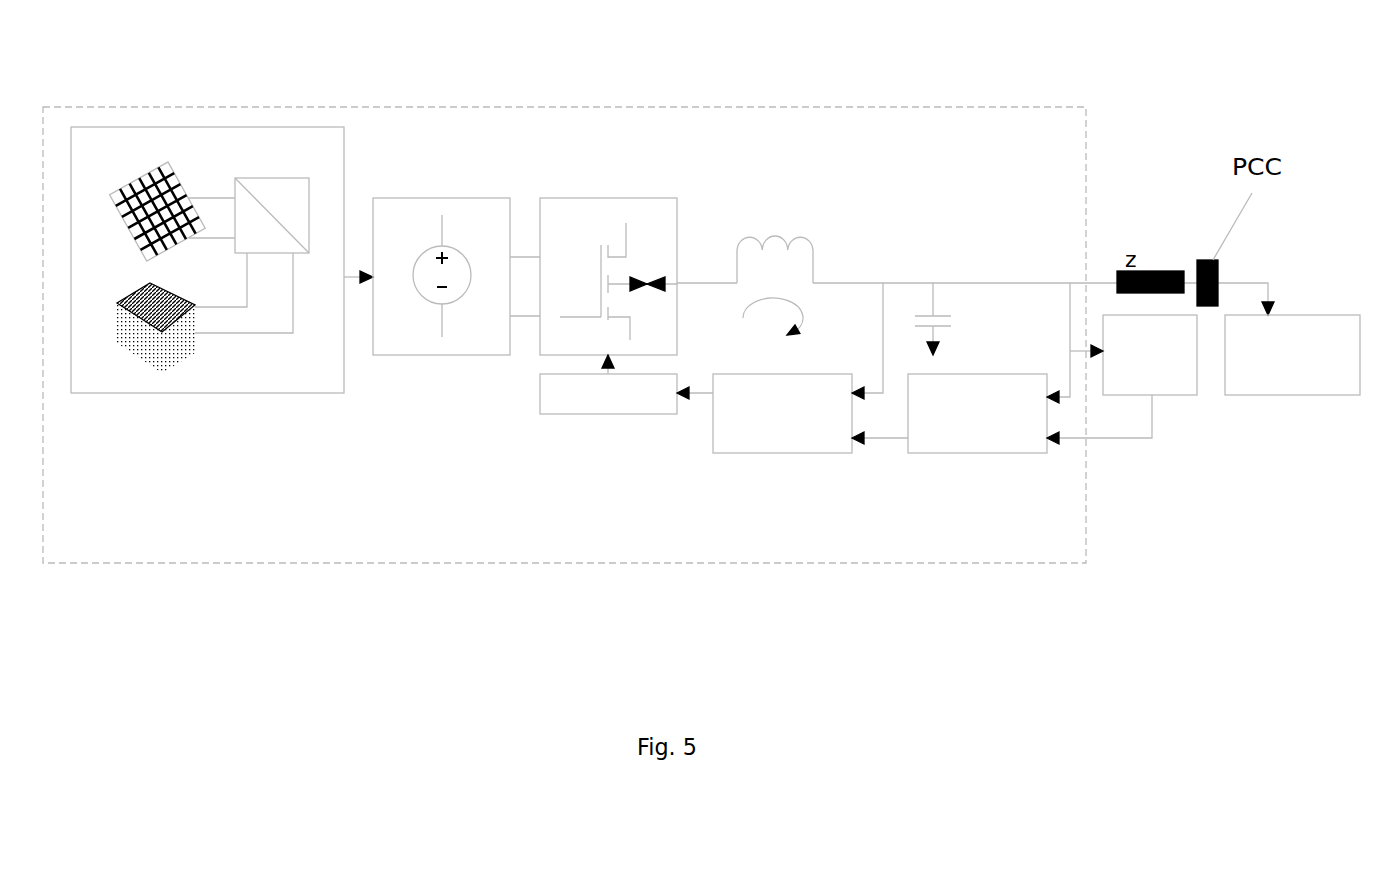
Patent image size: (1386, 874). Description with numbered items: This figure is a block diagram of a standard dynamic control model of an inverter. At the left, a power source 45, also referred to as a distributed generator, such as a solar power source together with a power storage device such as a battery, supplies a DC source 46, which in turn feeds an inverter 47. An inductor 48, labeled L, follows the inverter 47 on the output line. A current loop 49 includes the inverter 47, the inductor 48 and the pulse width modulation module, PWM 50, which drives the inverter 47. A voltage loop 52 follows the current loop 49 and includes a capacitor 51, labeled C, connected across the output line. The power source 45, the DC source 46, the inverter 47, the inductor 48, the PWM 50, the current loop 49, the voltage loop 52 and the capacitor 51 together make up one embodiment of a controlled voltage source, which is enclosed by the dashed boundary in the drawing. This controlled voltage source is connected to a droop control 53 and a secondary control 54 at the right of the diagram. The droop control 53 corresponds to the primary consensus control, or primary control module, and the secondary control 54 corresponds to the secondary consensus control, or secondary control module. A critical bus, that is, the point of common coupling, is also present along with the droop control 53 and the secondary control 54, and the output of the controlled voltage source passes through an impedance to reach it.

The power source 45 is at (208, 127).
The DC source 46 is at (483, 198).
The inverter 47 is at (662, 198).
The inductor 48 is at (785, 227).
The current loop 49 is at (782, 453).
The pulse width modulation (PWM) module 50 is at (620, 414).
The capacitor 51 is at (932, 299).
The voltage loop 52 is at (977, 453).
The droop control 53 is at (1168, 395).
The secondary control 54 is at (1292, 395).